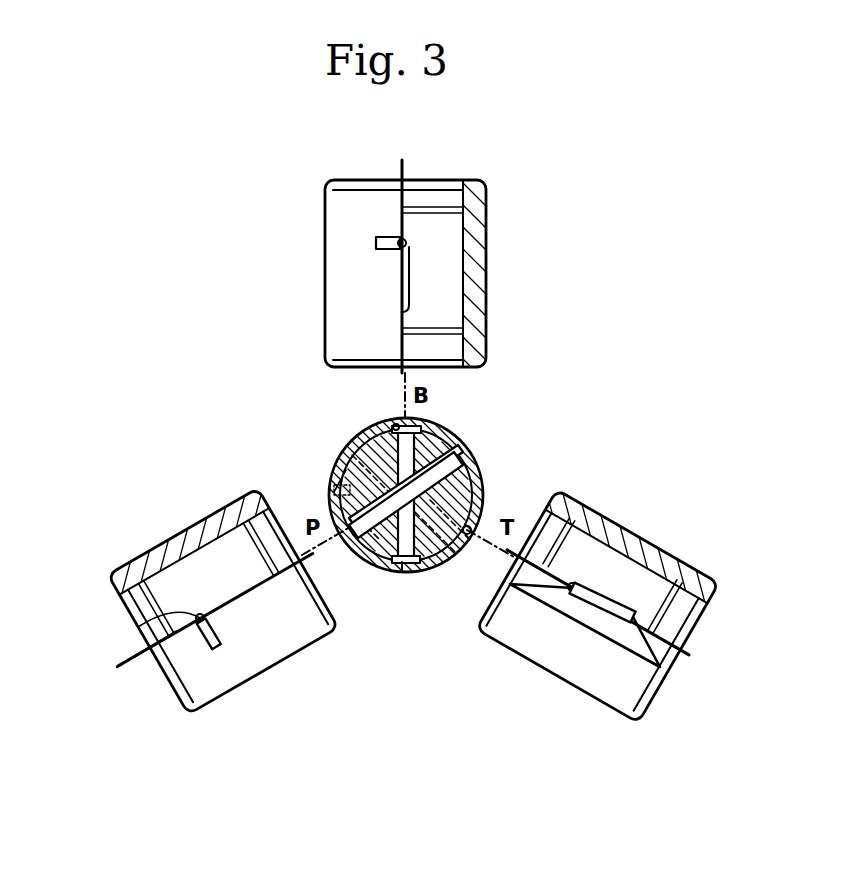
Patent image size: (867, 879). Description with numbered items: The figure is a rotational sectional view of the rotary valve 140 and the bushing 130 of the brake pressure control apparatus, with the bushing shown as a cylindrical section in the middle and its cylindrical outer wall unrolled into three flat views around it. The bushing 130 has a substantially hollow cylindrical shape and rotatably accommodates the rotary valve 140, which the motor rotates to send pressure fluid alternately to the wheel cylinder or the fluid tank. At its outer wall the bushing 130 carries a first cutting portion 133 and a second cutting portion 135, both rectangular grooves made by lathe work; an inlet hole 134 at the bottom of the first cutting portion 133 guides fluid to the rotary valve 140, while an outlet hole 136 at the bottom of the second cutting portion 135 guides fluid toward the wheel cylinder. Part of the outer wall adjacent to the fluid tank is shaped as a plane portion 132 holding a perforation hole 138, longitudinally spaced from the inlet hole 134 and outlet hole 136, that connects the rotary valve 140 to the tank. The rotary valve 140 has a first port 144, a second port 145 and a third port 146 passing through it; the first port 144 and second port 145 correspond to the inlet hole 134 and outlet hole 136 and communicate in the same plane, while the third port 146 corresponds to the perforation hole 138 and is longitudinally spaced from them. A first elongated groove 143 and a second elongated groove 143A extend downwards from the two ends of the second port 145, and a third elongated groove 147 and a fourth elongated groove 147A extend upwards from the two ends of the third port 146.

The bushing 130 is at (708, 523).
The plane portion 132 is at (606, 623).
The first cutting portion 133 is at (207, 643).
The inlet hole 134 is at (203, 618).
The second cutting portion 135 is at (387, 235).
The outlet hole 136 is at (402, 245).
The perforation hole 138 is at (470, 534).
The rotary valve 140 is at (445, 247).
The first elongated groove 143 is at (410, 293).
The second elongated groove 143A is at (409, 572).
The first port 144 is at (177, 630).
The second port 145 is at (406, 238).
The third port 146 is at (484, 478).
The third elongated groove 147 is at (443, 548).
The fourth elongated groove 147A is at (330, 490).